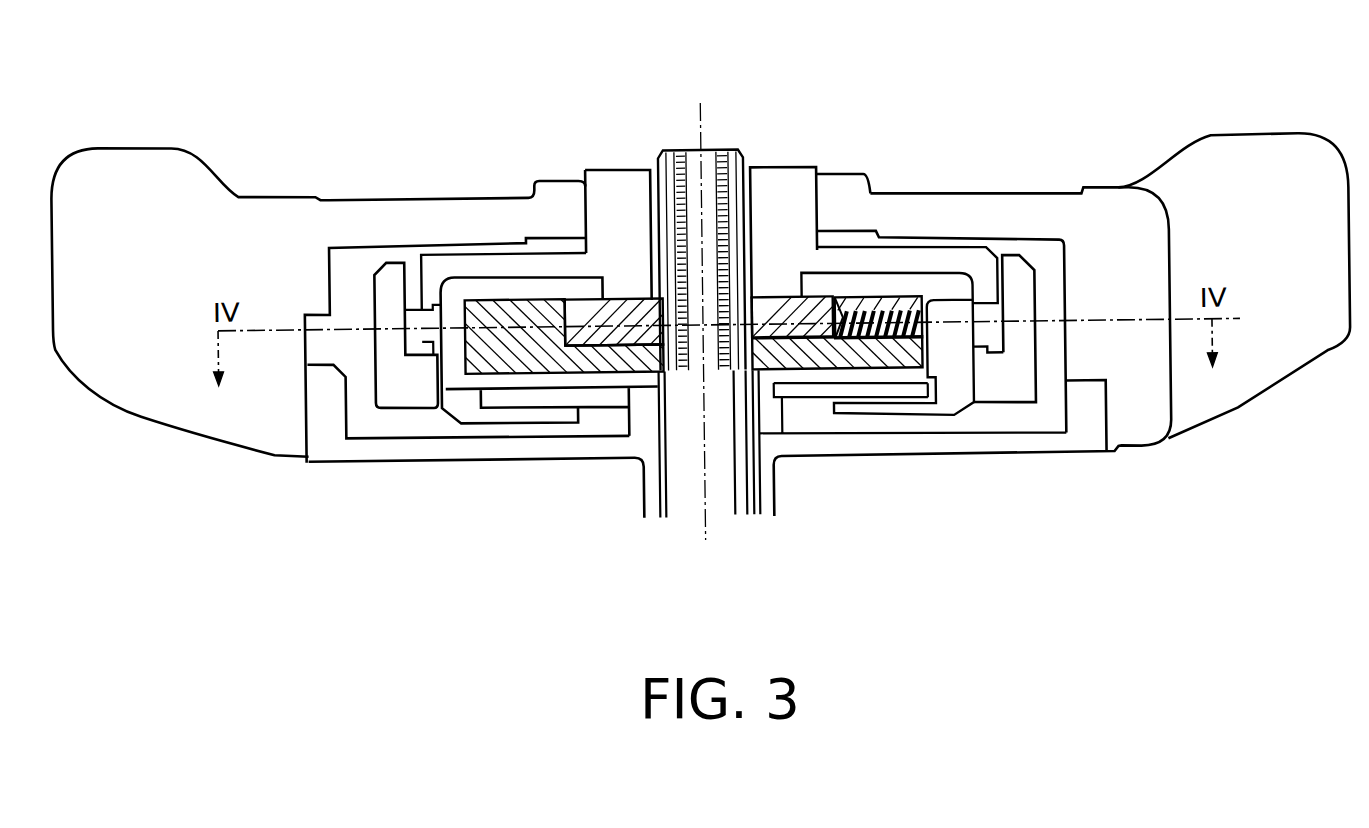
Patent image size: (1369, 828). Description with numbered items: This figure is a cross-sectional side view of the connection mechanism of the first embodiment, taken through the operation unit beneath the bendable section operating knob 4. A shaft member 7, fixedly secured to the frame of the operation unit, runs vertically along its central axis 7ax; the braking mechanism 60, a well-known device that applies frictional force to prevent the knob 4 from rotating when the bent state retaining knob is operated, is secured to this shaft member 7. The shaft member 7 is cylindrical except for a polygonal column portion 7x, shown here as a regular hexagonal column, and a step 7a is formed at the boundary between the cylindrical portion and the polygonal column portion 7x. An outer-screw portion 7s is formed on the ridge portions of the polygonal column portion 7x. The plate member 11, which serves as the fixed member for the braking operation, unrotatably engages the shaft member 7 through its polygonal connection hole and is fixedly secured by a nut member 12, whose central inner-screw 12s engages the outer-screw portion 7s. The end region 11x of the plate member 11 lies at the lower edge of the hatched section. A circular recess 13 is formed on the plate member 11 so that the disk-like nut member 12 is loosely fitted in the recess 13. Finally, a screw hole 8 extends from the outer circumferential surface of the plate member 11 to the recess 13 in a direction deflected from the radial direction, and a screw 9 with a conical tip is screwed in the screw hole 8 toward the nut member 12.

The bendable section operating knob 4 is at (1260, 136).
The braking mechanism 60 is at (997, 225).
The shaft member 7 is at (764, 444).
The step 7a is at (757, 320).
The shaft axis 7ax is at (700, 118).
The polygonal column portion 7x is at (705, 373).
The outer-screw portion 7s is at (728, 424).
The screw hole 8 is at (922, 340).
The screw 9 is at (840, 339).
The plate member 11 is at (513, 298).
The bearing housing end 11x is at (662, 364).
The nut member 12 is at (620, 298).
The inner-screw 12s is at (650, 344).
The circular recess 13 is at (512, 306).